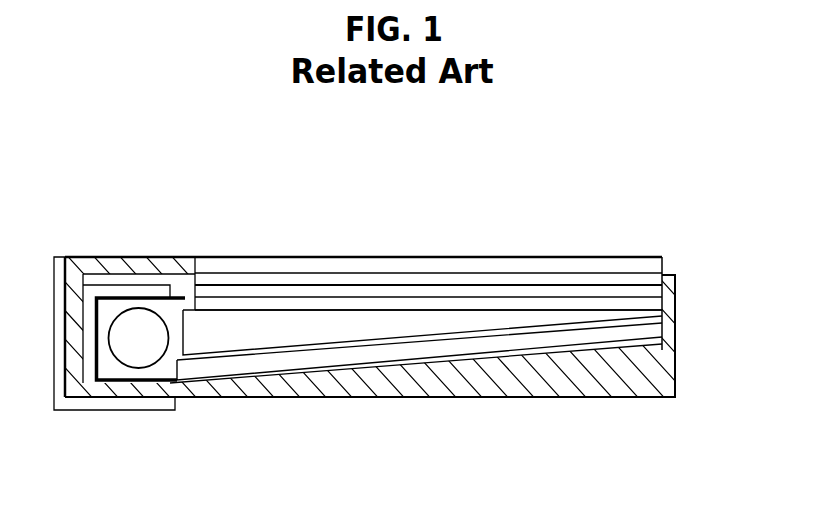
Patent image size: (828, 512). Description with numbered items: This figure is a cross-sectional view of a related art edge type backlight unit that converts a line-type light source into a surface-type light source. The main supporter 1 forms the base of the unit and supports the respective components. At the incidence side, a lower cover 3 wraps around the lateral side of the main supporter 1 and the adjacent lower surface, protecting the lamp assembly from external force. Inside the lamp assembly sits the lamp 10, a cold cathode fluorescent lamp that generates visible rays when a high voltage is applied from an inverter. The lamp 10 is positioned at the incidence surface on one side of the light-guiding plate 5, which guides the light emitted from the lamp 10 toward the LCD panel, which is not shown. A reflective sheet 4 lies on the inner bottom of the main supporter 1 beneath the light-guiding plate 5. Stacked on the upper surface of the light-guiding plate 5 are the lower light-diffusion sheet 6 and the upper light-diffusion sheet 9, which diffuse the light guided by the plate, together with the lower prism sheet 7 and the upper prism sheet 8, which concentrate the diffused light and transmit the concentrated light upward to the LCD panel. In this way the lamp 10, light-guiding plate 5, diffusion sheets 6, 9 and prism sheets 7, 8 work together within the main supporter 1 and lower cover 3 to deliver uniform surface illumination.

The main supporter 1 is at (553, 387).
The lower cover 3 is at (82, 400).
The reflective sheet 4 is at (380, 353).
The light-guiding plate 5 is at (235, 340).
The lower light-diffusion sheet 6 is at (652, 305).
The lower prism sheet 7 is at (652, 294).
The upper prism sheet 8 is at (568, 278).
The upper light-diffusion sheet 9 is at (485, 262).
The lamp 10 is at (138, 360).